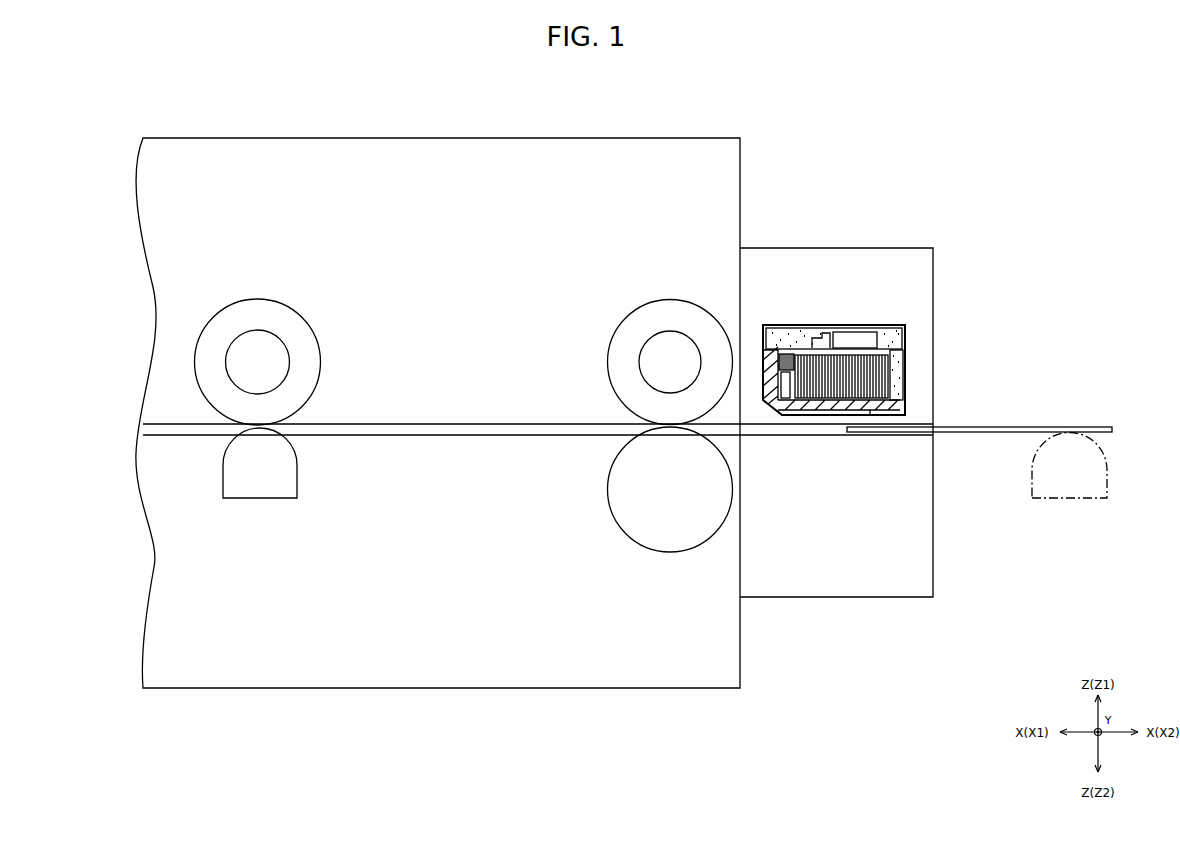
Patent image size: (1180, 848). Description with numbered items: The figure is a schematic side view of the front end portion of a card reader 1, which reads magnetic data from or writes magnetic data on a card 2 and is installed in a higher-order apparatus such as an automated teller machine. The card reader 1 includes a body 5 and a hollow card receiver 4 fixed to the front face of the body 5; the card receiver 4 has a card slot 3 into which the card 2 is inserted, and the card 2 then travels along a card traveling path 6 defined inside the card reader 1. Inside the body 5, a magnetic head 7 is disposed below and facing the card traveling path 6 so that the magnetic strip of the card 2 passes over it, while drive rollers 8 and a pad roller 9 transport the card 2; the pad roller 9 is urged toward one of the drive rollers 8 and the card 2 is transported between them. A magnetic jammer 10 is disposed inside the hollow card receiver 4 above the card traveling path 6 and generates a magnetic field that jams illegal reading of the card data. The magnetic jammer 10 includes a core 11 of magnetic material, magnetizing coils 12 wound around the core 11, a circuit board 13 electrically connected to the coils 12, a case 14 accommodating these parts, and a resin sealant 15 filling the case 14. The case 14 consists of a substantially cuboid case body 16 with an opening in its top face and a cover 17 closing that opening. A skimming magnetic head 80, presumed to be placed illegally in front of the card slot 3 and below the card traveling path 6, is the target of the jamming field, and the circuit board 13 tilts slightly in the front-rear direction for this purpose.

The card reader 1 is at (999, 113).
The card 2 is at (1090, 427).
The card slot 3 is at (942, 421).
The card receiver 4 is at (902, 247).
The body 5 is at (690, 138).
The card traveling path 6 is at (465, 423).
The magnetic head 7 is at (262, 499).
The drive rollers 8 is at (248, 299).
The pad roller 9 is at (670, 552).
The magnetic jammer 10 is at (835, 374).
The core 11 is at (795, 403).
The magnetizing coils 12 is at (814, 406).
The circuit board 13 is at (792, 330).
The case 14 is at (828, 408).
The resin sealant 15 is at (885, 328).
The case body 16 is at (841, 419).
The cover 17 is at (820, 333).
The skimming magnetic head 80 is at (1108, 490).